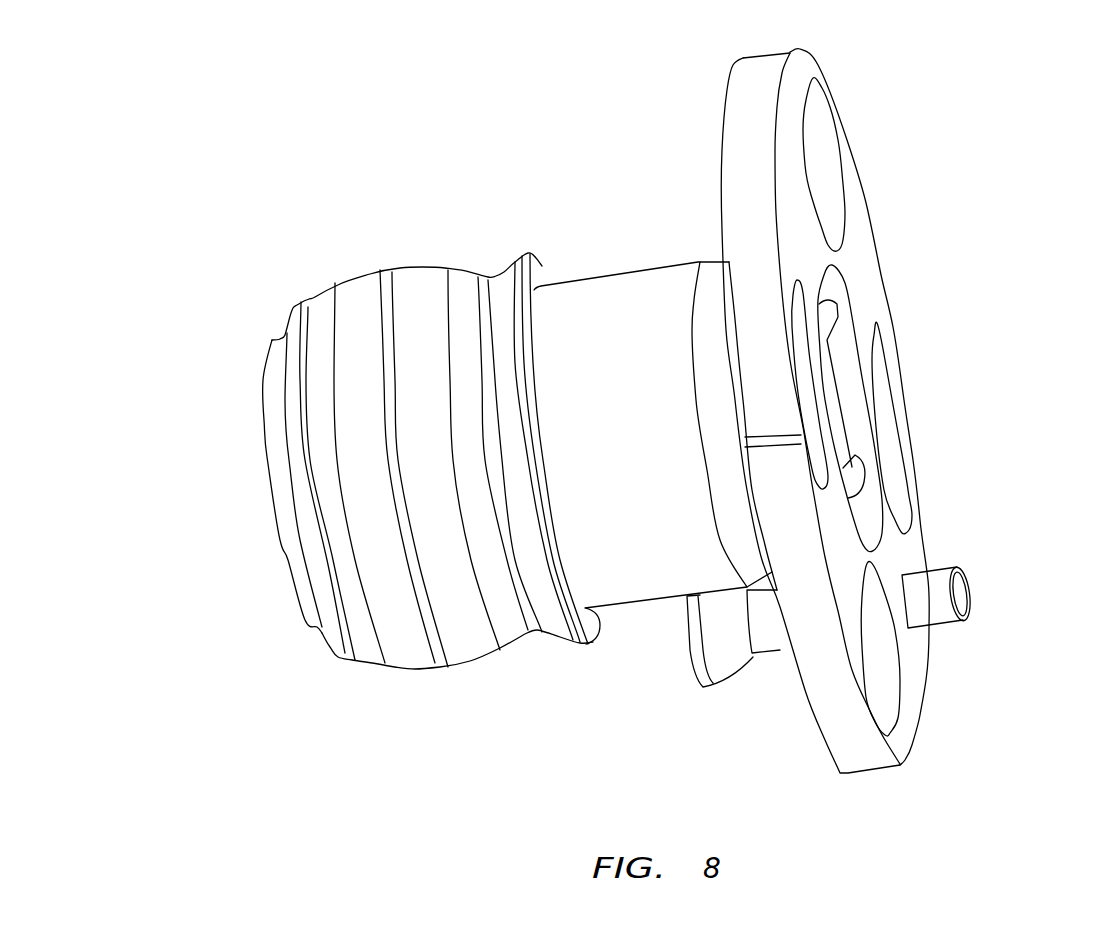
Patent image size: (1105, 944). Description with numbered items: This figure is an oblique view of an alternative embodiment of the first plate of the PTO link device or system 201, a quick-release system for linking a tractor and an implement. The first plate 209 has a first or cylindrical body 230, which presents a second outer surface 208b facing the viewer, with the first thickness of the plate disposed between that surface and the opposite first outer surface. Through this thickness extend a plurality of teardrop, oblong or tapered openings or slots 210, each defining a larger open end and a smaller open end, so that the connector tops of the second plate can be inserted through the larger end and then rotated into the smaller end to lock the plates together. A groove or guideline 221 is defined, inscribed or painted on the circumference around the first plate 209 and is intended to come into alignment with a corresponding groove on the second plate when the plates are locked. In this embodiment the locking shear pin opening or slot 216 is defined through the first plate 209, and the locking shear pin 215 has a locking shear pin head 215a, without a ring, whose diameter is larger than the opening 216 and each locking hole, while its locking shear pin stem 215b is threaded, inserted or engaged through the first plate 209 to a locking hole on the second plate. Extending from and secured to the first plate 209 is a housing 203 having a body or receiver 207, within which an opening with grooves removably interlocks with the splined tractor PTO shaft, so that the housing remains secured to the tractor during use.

The PTO link device or system 201 is at (984, 59).
The housing 203 is at (429, 149).
The body or receiver 207 is at (402, 667).
The first or cylindrical body 230 is at (728, 95).
The first plate 209 is at (805, 707).
The openings or slots 210 is at (822, 82).
The second outer surface 208b is at (828, 259).
The groove or guideline 221 is at (768, 431).
The locking shear pin 215 is at (681, 662).
The locking shear pin head 215a is at (737, 684).
The locking shear pin stem 215b is at (947, 569).
The locking shear pin opening or slot 216 is at (908, 608).